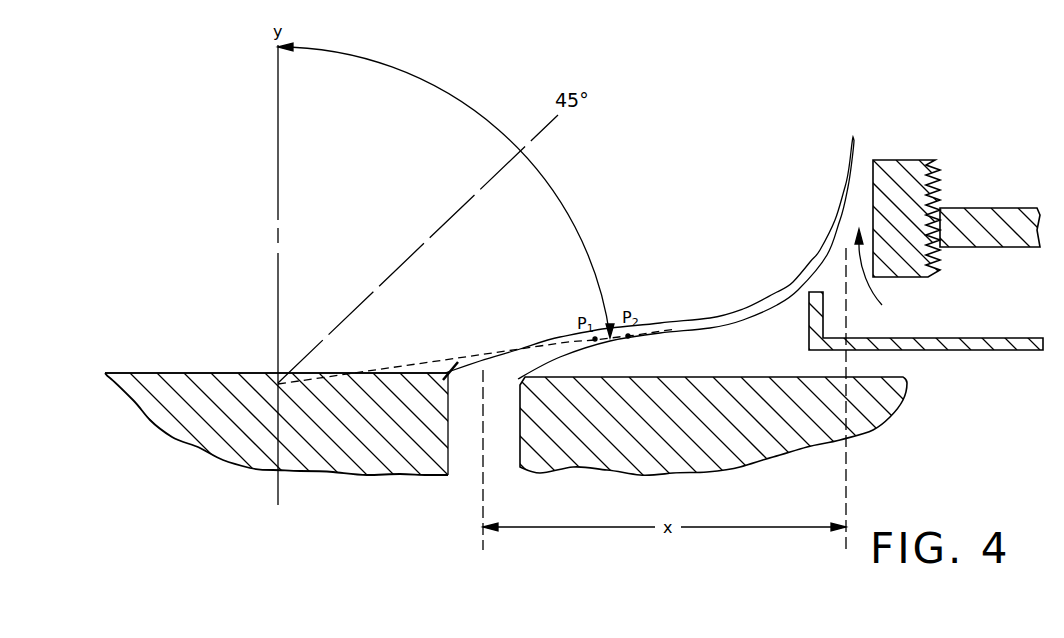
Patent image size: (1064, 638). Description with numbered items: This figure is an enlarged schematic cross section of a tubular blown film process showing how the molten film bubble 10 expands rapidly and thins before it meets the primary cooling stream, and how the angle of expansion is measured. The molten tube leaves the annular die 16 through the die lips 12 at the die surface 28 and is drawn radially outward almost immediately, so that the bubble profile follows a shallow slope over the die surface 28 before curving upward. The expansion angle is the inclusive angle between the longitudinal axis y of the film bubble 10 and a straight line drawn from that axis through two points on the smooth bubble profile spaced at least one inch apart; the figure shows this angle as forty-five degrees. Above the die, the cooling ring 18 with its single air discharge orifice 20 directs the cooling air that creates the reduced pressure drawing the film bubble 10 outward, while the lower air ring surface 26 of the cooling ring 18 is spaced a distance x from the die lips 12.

The film bubble 10 is at (816, 249).
The die lips 12 is at (451, 373).
The annular die 16 is at (373, 467).
The cooling ring 18 is at (970, 208).
The air discharge orifice 20 is at (866, 160).
The lower air ring surface 26 is at (957, 351).
The die surface 28 is at (172, 373).